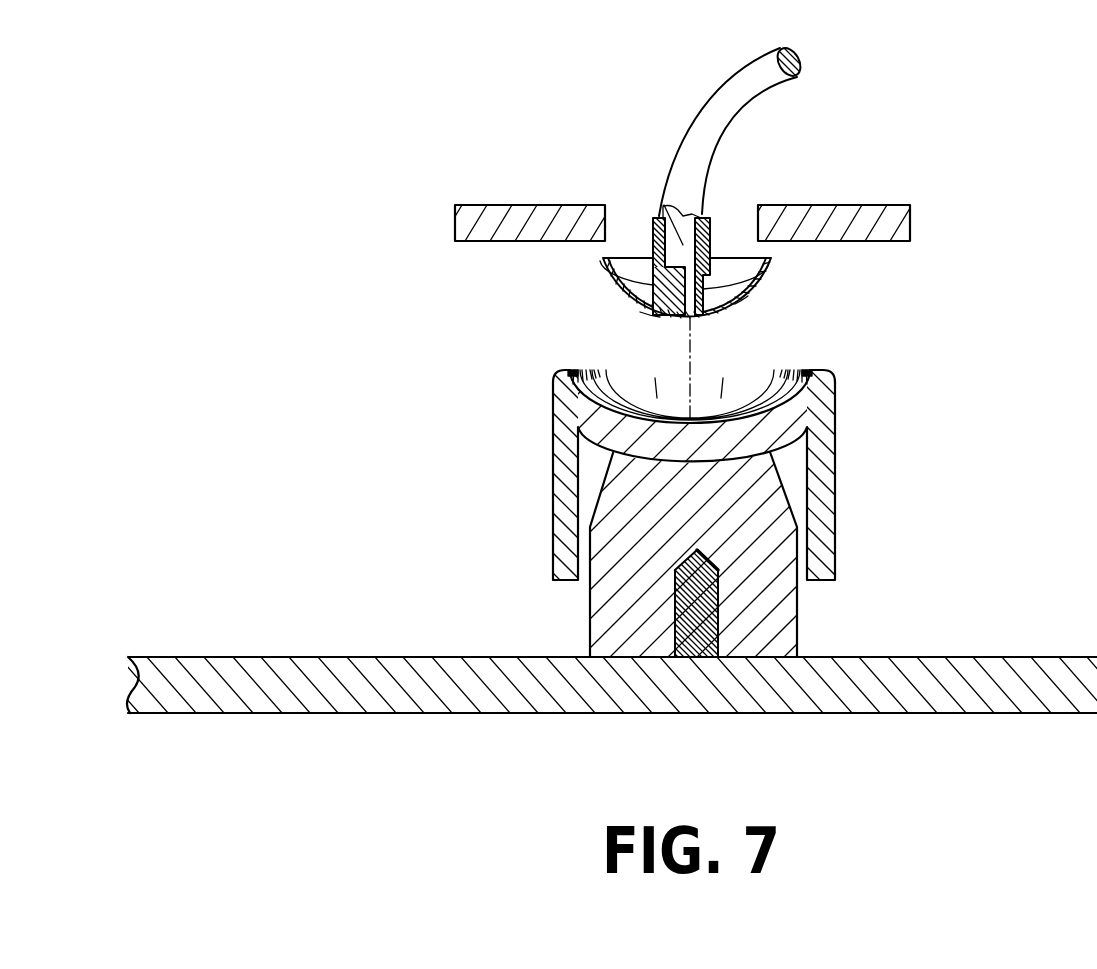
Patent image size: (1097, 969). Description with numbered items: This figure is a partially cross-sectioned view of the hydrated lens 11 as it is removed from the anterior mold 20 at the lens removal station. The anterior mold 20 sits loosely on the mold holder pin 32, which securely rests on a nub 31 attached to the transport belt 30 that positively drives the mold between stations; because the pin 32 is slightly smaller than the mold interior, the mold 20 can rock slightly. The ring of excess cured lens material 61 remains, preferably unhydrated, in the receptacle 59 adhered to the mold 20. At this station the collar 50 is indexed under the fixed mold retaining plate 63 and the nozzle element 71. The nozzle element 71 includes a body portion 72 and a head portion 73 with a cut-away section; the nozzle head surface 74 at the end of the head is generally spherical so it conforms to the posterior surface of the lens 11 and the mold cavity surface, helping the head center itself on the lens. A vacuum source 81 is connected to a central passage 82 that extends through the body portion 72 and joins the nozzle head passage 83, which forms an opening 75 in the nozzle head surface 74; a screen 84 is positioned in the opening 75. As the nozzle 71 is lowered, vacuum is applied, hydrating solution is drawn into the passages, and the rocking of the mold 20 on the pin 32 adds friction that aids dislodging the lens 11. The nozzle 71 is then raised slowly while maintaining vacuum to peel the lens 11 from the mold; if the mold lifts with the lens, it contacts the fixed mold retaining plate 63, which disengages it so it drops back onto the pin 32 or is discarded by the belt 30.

The lens 11 is at (740, 307).
The anterior mold 20 is at (836, 455).
The transport belt 30 is at (953, 657).
The nub 31 is at (672, 636).
The mold holder pin 32 is at (589, 614).
The collar 50 is at (568, 370).
The receptacle 59 is at (560, 375).
The ring of excess cured lens material 61 is at (810, 372).
The fixed mold retaining plate 63 is at (848, 205).
The nozzle element 71 is at (711, 233).
The body portion 72 is at (651, 232).
The head portion 73 is at (753, 287).
The nozzle head surface 74 is at (650, 310).
The opening 75 is at (685, 317).
The vacuum source 81 is at (725, 72).
The central passage 82 is at (659, 218).
The nozzle head passage 83 is at (607, 265).
The screen 84 is at (700, 319).